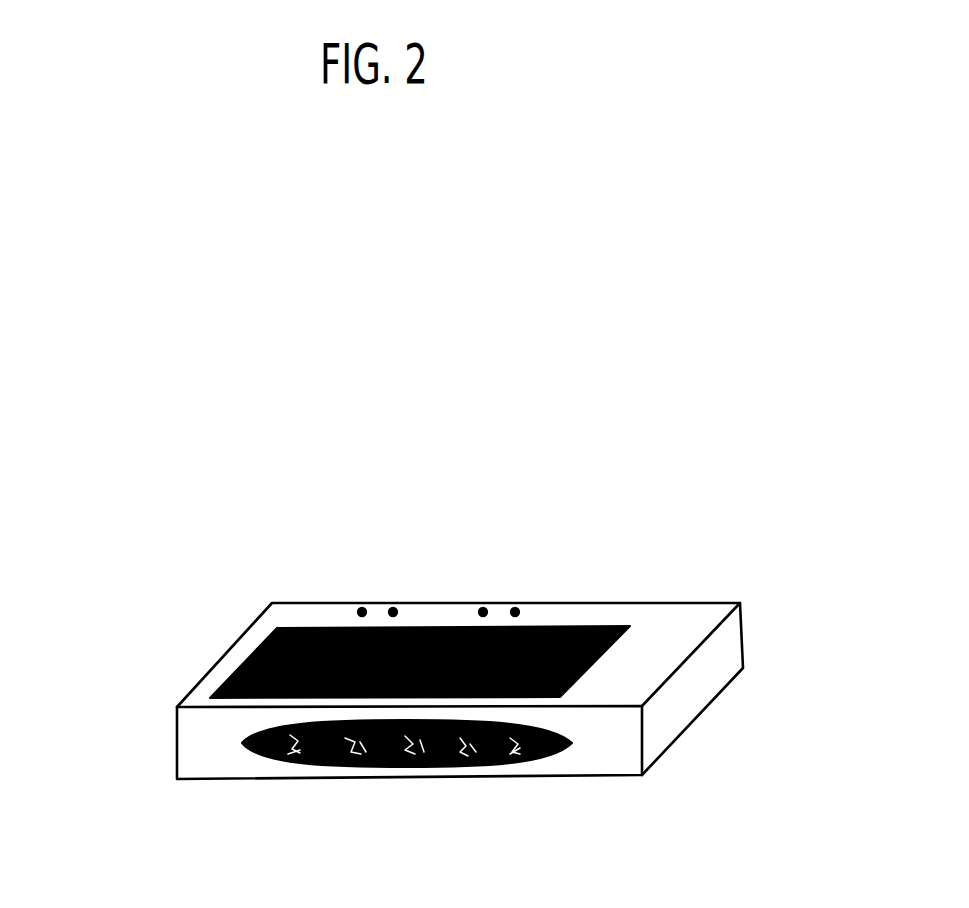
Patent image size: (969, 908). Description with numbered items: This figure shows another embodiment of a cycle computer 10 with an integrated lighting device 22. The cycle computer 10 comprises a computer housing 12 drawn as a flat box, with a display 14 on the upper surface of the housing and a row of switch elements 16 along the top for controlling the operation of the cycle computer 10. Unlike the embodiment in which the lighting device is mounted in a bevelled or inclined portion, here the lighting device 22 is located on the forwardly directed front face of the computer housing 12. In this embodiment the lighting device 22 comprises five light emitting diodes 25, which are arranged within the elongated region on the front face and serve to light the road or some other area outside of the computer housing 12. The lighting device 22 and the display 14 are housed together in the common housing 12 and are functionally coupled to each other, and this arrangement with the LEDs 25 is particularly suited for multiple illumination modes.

The cycle computer 10 is at (456, 654).
The computer housing 12 is at (692, 693).
The display 14 is at (240, 663).
The switch elements 16 is at (398, 605).
The lighting device 22 is at (421, 800).
The light emitting diodes 25 is at (490, 770).